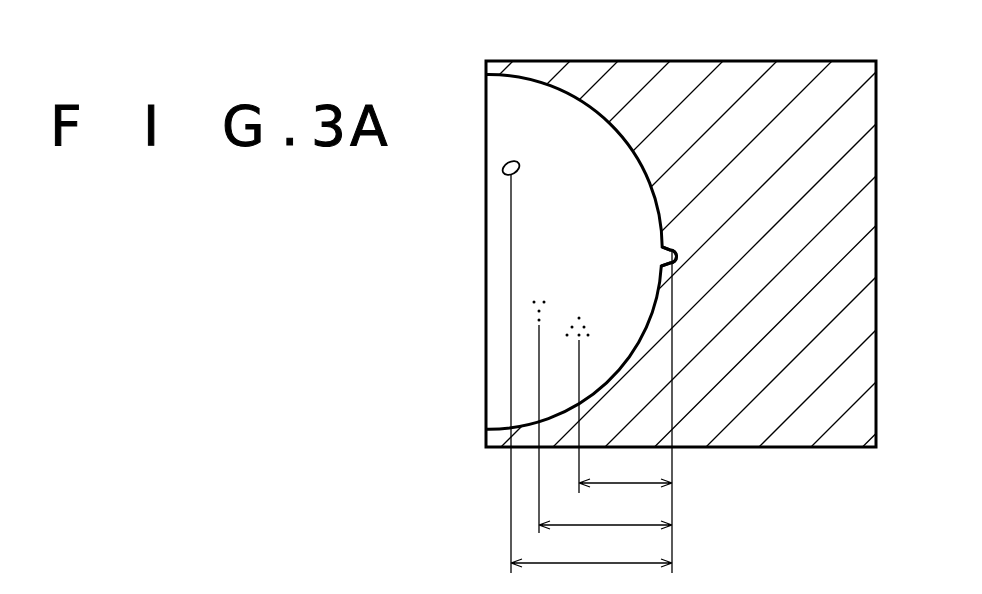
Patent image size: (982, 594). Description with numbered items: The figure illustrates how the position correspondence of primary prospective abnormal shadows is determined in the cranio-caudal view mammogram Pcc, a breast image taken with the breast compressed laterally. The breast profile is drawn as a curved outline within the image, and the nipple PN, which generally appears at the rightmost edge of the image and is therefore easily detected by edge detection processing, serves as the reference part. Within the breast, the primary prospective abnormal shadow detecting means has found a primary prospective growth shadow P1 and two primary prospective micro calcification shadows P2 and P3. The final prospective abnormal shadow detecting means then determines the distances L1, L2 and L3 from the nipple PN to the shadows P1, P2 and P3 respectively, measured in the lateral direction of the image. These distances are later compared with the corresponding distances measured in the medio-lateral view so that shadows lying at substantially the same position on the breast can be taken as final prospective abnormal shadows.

The cranio-caudal view mammogram Pcc is at (647, 47).
The nipple PN is at (676, 247).
The primary prospective growth shadow P1 is at (524, 358).
The primary prospective micro calcification shadow P2 is at (541, 400).
The primary prospective micro calcification shadow P3 is at (596, 404).
The distance L1 is at (591, 411).
The distance L2 is at (605, 512).
The distance L3 is at (625, 471).